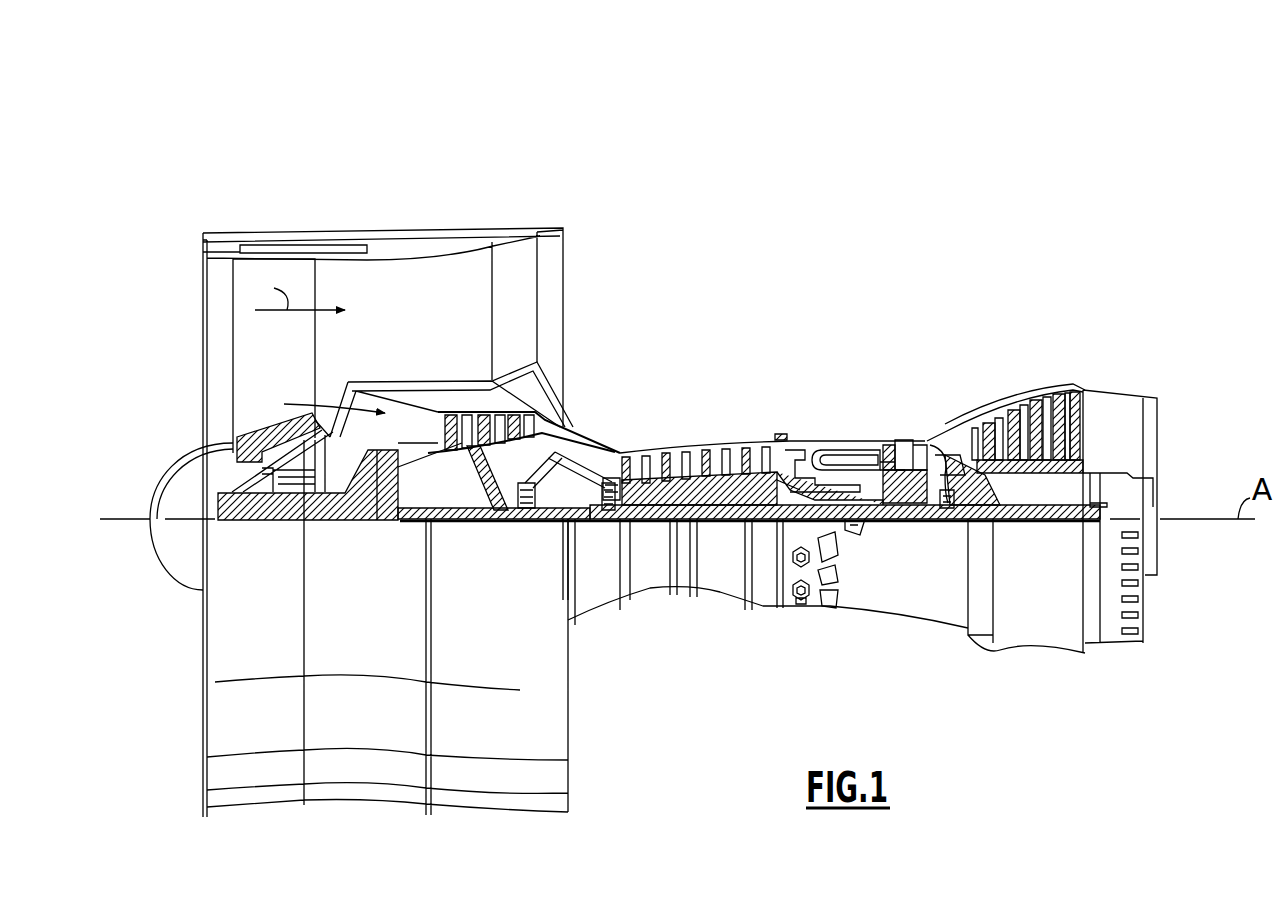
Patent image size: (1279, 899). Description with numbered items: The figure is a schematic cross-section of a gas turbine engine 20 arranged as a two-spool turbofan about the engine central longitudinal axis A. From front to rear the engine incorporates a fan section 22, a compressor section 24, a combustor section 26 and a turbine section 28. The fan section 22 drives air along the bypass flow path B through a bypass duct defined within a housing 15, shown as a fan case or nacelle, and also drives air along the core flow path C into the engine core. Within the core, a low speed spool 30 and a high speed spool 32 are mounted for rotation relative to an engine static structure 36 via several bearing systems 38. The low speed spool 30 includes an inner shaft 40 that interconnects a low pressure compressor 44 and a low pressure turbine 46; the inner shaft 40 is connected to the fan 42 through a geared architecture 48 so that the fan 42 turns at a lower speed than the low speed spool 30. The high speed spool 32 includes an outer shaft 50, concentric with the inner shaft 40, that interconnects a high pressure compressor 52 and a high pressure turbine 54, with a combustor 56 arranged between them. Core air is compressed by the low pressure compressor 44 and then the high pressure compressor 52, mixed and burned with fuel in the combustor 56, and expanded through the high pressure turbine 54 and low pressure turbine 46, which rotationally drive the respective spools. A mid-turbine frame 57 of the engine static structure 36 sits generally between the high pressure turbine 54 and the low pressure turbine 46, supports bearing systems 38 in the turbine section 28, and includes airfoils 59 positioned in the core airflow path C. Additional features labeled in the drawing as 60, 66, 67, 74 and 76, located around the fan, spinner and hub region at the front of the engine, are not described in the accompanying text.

The housing 15 is at (383, 238).
The gas turbine engine 20 is at (848, 283).
The fan section 22 is at (312, 232).
The compressor section 24 is at (618, 428).
The combustor section 26 is at (838, 415).
The turbine section 28 is at (985, 382).
The low speed spool 30 is at (725, 523).
The high speed spool 32 is at (765, 470).
The engine static structure 36 is at (765, 605).
The bearing systems 38 is at (525, 525).
The inner shaft 40 is at (588, 530).
The fan 42 is at (261, 366).
The low pressure compressor 44 is at (520, 410).
The low pressure turbine 46 is at (1035, 410).
The geared architecture 48 is at (390, 500).
The outer shaft 50 is at (855, 522).
The high pressure compressor 52 is at (703, 452).
The high pressure turbine 54 is at (905, 455).
The combustor 56 is at (845, 460).
The mid-turbine frame 57 is at (948, 428).
The airfoils 59 is at (968, 480).
The core airflow 60 is at (215, 478).
The fan hub 66 is at (210, 452).
The shaft 67 is at (350, 510).
The fan blade platform 74 is at (237, 437).
The nose cone 76 is at (152, 496).